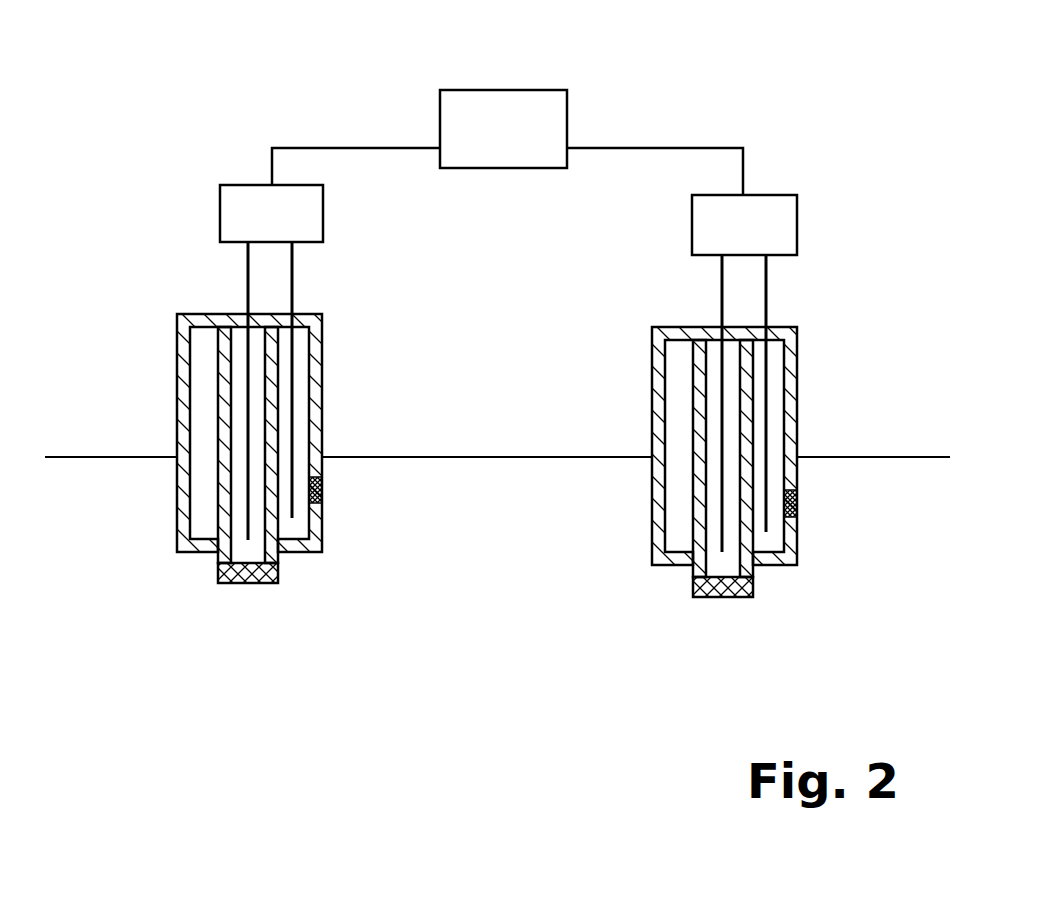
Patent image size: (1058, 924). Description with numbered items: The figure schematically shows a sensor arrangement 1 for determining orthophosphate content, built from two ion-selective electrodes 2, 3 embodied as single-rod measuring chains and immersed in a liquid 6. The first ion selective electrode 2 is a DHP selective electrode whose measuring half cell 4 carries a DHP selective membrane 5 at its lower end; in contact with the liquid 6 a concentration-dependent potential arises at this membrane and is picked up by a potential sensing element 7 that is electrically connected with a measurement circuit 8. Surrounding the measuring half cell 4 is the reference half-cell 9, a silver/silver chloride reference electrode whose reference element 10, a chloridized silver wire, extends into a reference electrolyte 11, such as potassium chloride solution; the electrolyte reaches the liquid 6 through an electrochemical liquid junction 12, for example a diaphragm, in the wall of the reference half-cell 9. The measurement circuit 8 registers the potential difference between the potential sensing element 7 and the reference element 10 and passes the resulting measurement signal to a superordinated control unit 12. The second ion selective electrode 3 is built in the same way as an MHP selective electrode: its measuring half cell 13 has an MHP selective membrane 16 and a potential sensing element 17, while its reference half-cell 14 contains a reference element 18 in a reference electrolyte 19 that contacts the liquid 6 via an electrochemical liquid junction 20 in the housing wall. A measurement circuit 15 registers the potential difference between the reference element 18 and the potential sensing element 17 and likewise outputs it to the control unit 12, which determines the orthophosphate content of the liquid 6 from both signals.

The sensor arrangement 1 is at (828, 66).
The first ion selective electrode 2 is at (138, 240).
The second ion selective electrode 3 is at (832, 283).
The measuring half cell 4 is at (257, 552).
The DHP selective membrane 5 is at (245, 585).
The liquid 6 is at (518, 500).
The potential sensing element 7 is at (247, 413).
The measurement circuit 8 is at (271, 213).
The reference half-cell 9 is at (300, 418).
The reference element 10 is at (293, 363).
The reference electrolyte 11 is at (297, 527).
The control unit 12 is at (313, 485).
The measuring half cell 13 is at (715, 525).
The reference half-cell 14 is at (677, 407).
The measurement circuit 15 is at (744, 225).
The MHP selective membrane 16 is at (737, 600).
The potential sensing element 17 is at (718, 492).
The reference element 18 is at (770, 428).
The reference electrolyte 19 is at (770, 540).
The electrochemical liquid junction 20 is at (793, 503).